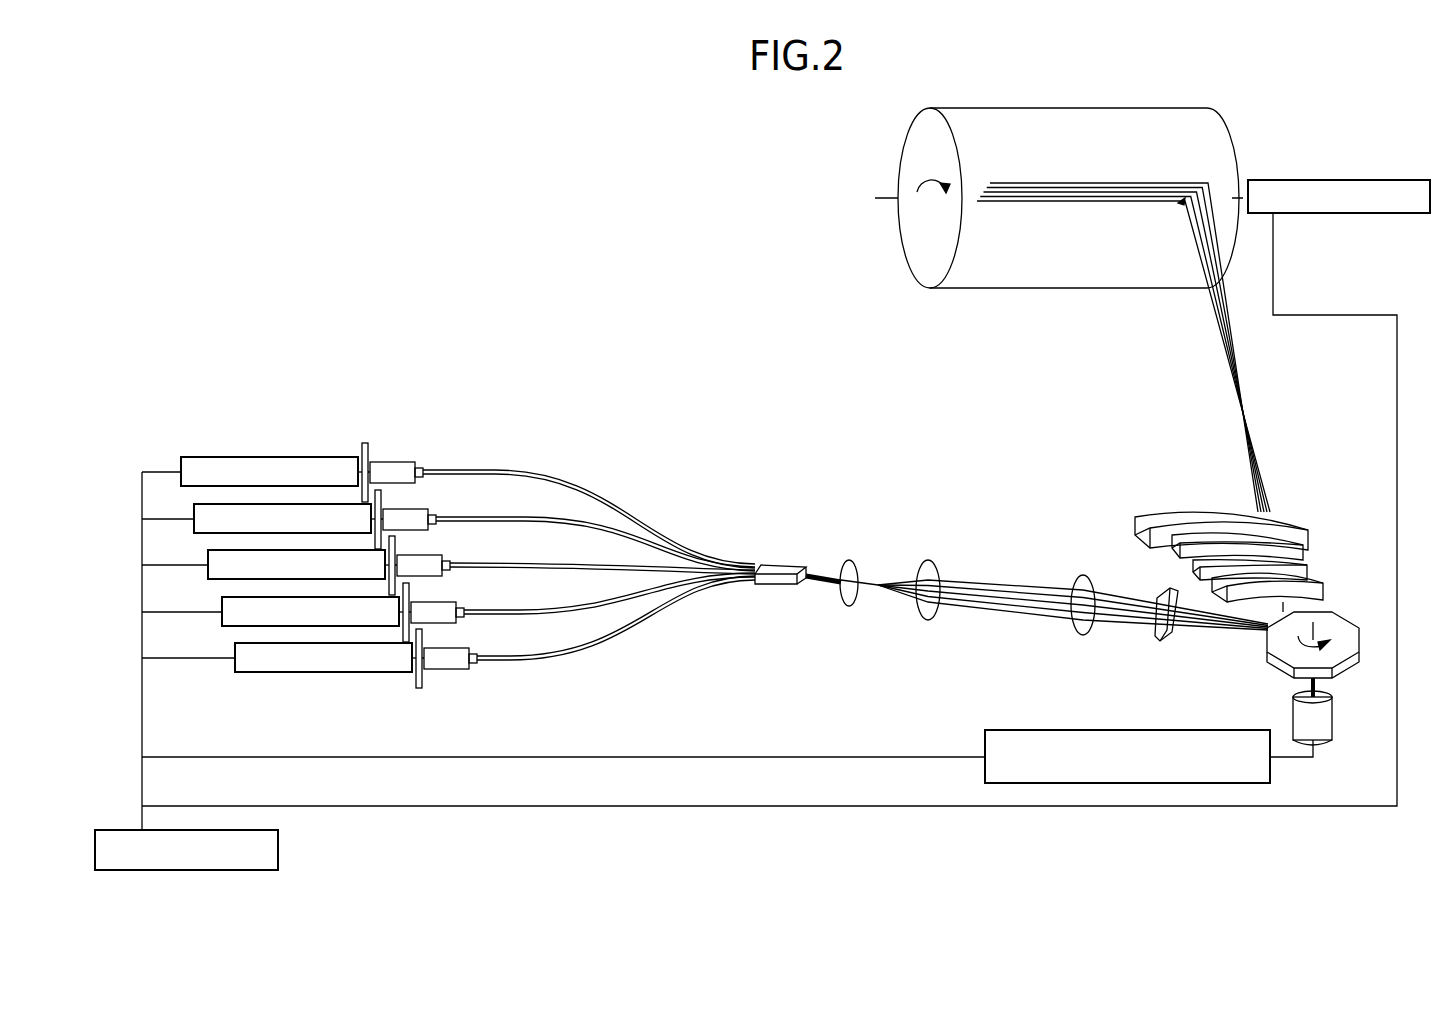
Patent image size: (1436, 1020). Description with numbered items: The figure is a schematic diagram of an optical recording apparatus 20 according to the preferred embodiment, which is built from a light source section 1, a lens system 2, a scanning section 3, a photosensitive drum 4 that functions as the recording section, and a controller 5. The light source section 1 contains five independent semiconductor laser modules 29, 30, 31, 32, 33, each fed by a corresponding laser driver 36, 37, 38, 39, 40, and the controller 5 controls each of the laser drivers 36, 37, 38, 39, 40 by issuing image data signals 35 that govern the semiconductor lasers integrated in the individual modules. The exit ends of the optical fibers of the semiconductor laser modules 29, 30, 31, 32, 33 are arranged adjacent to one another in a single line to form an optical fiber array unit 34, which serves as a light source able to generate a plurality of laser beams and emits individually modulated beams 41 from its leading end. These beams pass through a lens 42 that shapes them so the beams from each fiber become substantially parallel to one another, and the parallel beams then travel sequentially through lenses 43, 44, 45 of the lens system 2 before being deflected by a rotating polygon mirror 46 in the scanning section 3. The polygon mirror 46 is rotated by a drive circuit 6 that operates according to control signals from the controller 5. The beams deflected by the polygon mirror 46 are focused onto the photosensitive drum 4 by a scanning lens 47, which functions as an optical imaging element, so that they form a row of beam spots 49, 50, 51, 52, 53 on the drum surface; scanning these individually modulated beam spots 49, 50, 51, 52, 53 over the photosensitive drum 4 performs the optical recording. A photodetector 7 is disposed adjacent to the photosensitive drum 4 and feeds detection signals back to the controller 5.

The light source section 1 is at (538, 431).
The lens system 2 is at (933, 648).
The scanning section 3 is at (1343, 495).
The photosensitive drum 4 is at (993, 280).
The controller 5 is at (280, 852).
The drive circuit 6 is at (1028, 730).
The photodetector 7 is at (1353, 178).
The optical recording apparatus 20 is at (648, 272).
The semiconductor laser module 29 is at (392, 460).
The semiconductor laser module 30 is at (405, 507).
The semiconductor laser module 31 is at (419, 553).
The semiconductor laser module 32 is at (433, 600).
The semiconductor laser module 33 is at (446, 646).
The optical fiber array unit 34 is at (781, 566).
The image data signals 35 is at (142, 707).
The laser driver 36 is at (187, 457).
The laser driver 37 is at (200, 504).
The laser driver 38 is at (214, 550).
The laser driver 39 is at (228, 597).
The laser driver 40 is at (241, 643).
The individual beams 41 is at (823, 574).
The lens 42 is at (849, 561).
The lens 43 is at (930, 561).
The lens 44 is at (1083, 576).
The lens 45 is at (1161, 644).
The polygon mirror 46 is at (1346, 665).
The scanning lens 47 is at (1307, 515).
The beam spot 49 is at (1190, 178).
The beam spot 50 is at (1124, 350).
The beam spot 51 is at (1124, 352).
The beam spot 52 is at (1123, 355).
The beam spot 53 is at (1123, 356).